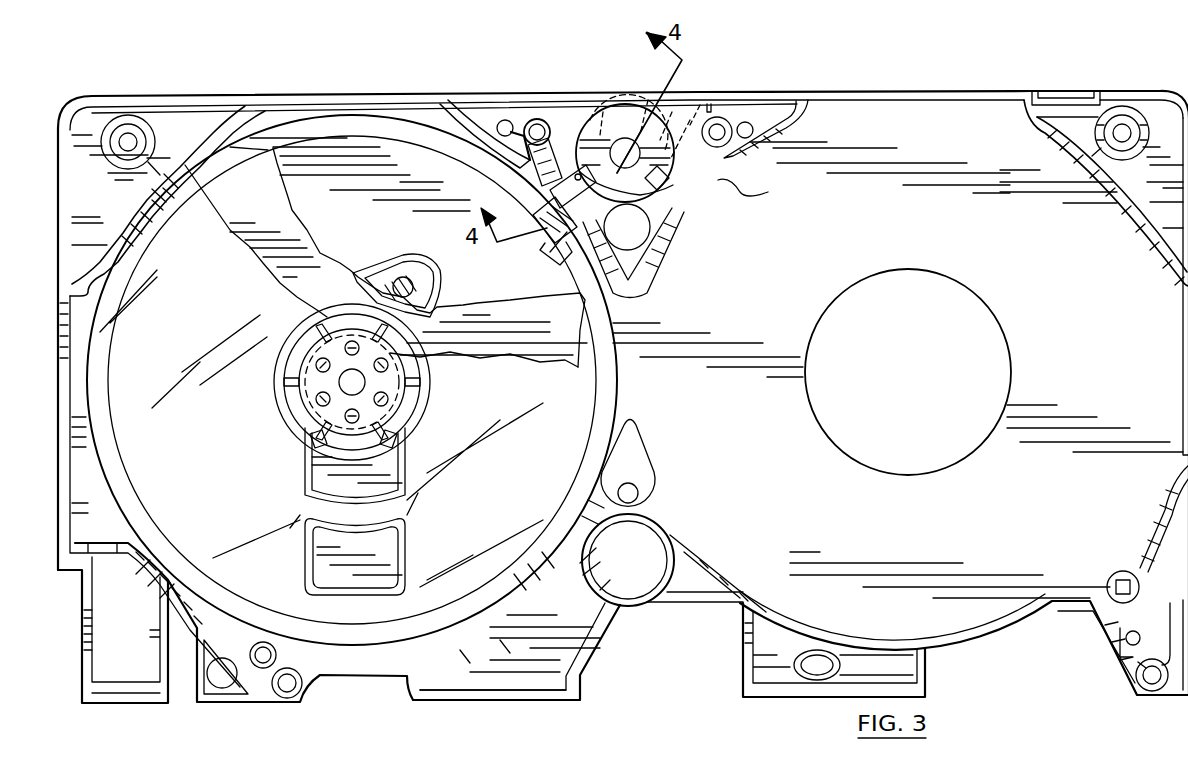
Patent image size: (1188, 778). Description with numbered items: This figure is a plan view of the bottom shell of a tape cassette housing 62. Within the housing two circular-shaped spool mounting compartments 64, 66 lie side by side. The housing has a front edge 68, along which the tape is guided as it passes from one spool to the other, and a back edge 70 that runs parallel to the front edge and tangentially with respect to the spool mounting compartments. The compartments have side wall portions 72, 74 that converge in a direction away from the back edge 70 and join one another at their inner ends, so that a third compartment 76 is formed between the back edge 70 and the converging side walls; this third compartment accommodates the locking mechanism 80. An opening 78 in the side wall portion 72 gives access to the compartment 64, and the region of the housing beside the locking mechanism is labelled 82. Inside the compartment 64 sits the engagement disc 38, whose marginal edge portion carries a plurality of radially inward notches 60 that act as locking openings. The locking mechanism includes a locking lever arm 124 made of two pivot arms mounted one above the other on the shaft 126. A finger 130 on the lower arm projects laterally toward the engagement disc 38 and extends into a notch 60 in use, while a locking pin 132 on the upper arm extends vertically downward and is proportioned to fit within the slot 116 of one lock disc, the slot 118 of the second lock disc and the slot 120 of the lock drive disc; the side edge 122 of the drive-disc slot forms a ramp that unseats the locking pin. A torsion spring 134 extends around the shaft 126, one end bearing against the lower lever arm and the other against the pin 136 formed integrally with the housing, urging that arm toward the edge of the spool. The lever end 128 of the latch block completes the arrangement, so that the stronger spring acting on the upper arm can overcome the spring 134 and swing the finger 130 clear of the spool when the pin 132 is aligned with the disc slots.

The engagement disc 38 is at (322, 127).
The notches 60 is at (547, 237).
The tape cassette housing 62 is at (342, 84).
The spool mounting compartment 64 is at (277, 115).
The spool mounting compartment 66 is at (955, 108).
The front edge 68 is at (480, 700).
The back edge 70 is at (820, 92).
The side wall portion 72 is at (588, 268).
The side wall portion 74 is at (673, 235).
The third compartment 76 is at (488, 113).
The opening 78 is at (528, 173).
The locking mechanism 80 is at (562, 124).
The housing area 82 is at (755, 192).
The slot 116 is at (663, 163).
The slot 118 is at (702, 98).
The slot 120 is at (593, 102).
The side edge 122 is at (630, 100).
The locking lever arm 124 is at (528, 160).
The shaft 126 is at (538, 118).
The lever block 128 is at (570, 233).
The finger 130 is at (543, 202).
The locking pin 132 is at (657, 192).
The torsion spring 134 is at (515, 125).
The pin 136 is at (487, 112).